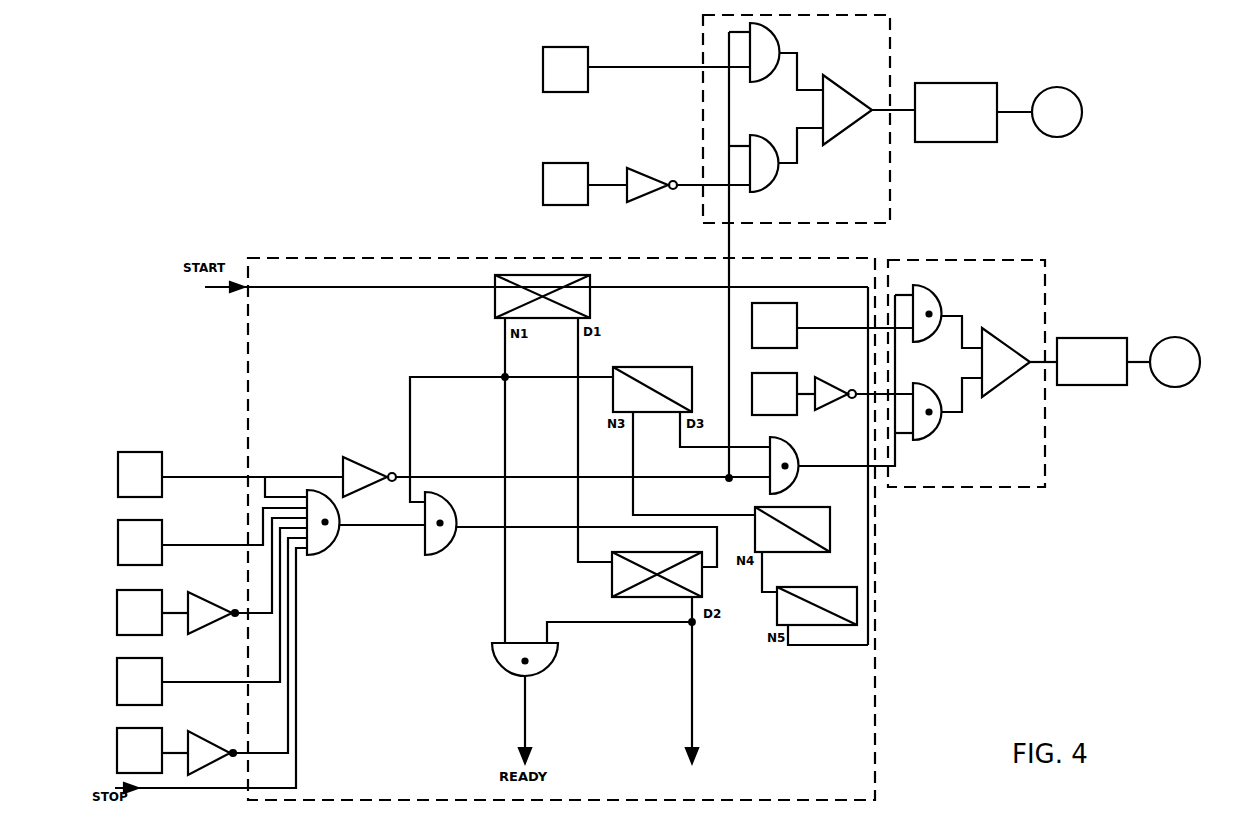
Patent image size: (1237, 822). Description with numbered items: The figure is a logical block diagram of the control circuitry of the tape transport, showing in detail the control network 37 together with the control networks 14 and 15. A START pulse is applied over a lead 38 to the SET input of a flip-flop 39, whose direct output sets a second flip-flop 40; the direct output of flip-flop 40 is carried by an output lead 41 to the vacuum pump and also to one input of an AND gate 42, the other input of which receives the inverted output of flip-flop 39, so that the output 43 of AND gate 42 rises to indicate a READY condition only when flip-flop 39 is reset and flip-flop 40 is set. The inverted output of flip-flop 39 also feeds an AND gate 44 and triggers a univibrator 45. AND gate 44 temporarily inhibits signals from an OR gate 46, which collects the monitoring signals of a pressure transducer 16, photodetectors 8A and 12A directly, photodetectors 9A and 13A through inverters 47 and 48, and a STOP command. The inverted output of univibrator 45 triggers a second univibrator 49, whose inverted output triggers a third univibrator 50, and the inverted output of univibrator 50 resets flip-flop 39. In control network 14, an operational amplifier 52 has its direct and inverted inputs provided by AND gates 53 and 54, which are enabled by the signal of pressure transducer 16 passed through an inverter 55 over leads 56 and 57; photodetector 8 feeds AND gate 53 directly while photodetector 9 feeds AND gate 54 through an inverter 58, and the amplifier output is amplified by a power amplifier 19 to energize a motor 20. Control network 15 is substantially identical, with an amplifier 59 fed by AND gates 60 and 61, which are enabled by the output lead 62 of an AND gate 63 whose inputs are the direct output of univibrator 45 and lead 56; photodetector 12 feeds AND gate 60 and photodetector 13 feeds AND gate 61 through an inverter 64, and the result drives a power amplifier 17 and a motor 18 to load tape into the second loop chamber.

The photodetector 8 is at (578, 93).
The photodetector 9 is at (555, 163).
The inverter 58 is at (642, 200).
The lead 57 is at (728, 335).
The AND gate 53 is at (783, 35).
The AND gate 54 is at (768, 190).
The operational amplifier 52 is at (838, 82).
The control network 14 is at (866, 216).
The power amplifier 19 is at (942, 82).
The motor 20 is at (1064, 88).
The control network 15 is at (1020, 478).
The photodetector 12 is at (797, 309).
The photodetector 13 is at (797, 373).
The inverter 64 is at (826, 408).
The AND gate 60 is at (930, 292).
The AND gate 61 is at (930, 438).
The amplifier 59 is at (998, 337).
The power amplifier 17 is at (1080, 337).
The motor 18 is at (1183, 340).
The AND gate 63 is at (795, 450).
The output lead 62 is at (820, 473).
The control network 37 is at (815, 781).
The lead 38 is at (334, 289).
The flip-flop 39 is at (490, 301).
The univibrator 45 is at (626, 366).
The pressure transducer 16 is at (118, 468).
The inverter 55 is at (346, 457).
The lead 56 is at (662, 480).
The photodetector 8A is at (118, 542).
The photodetector 9A is at (117, 616).
The inverter 47 is at (200, 630).
The photodetector 12A is at (117, 687).
The photodetector 13A is at (117, 755).
The inverter 48 is at (198, 730).
The OR gate 46 is at (325, 555).
The AND gate 44 is at (433, 556).
The univibrator 49 is at (830, 520).
The univibrator 50 is at (792, 585).
The flip-flop 40 is at (704, 580).
The output lead 41 is at (694, 692).
The AND gate 42 is at (560, 650).
The output 43 is at (528, 740).